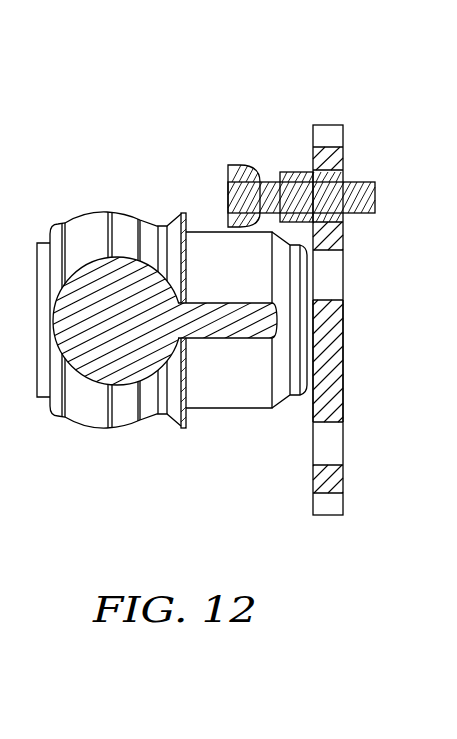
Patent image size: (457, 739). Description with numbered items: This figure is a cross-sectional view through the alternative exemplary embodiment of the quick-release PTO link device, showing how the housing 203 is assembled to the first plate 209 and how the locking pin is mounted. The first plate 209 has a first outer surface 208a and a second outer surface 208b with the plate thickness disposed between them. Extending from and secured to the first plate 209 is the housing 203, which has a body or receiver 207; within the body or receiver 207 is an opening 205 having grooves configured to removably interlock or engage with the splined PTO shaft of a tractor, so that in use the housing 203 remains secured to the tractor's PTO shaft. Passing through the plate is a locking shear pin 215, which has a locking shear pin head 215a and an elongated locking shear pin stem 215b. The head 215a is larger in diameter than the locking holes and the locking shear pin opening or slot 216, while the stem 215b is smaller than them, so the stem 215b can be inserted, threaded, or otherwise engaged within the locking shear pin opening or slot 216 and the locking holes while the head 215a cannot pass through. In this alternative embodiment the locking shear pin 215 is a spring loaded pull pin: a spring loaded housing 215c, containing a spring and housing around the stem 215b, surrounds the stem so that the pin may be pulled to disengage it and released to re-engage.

The housing 203 is at (78, 192).
The opening 205 is at (141, 323).
The body or receiver 207 is at (123, 430).
The first outer surface 208a is at (313, 410).
The second outer surface 208b is at (343, 414).
The first plate 209 is at (330, 125).
The locking shear pin 215 is at (236, 150).
The locking shear pin head 215a is at (228, 176).
The locking shear pin stem 215b is at (378, 181).
The spring loaded housing 215c is at (300, 173).
The locking shear pin opening or slot 216 is at (343, 178).